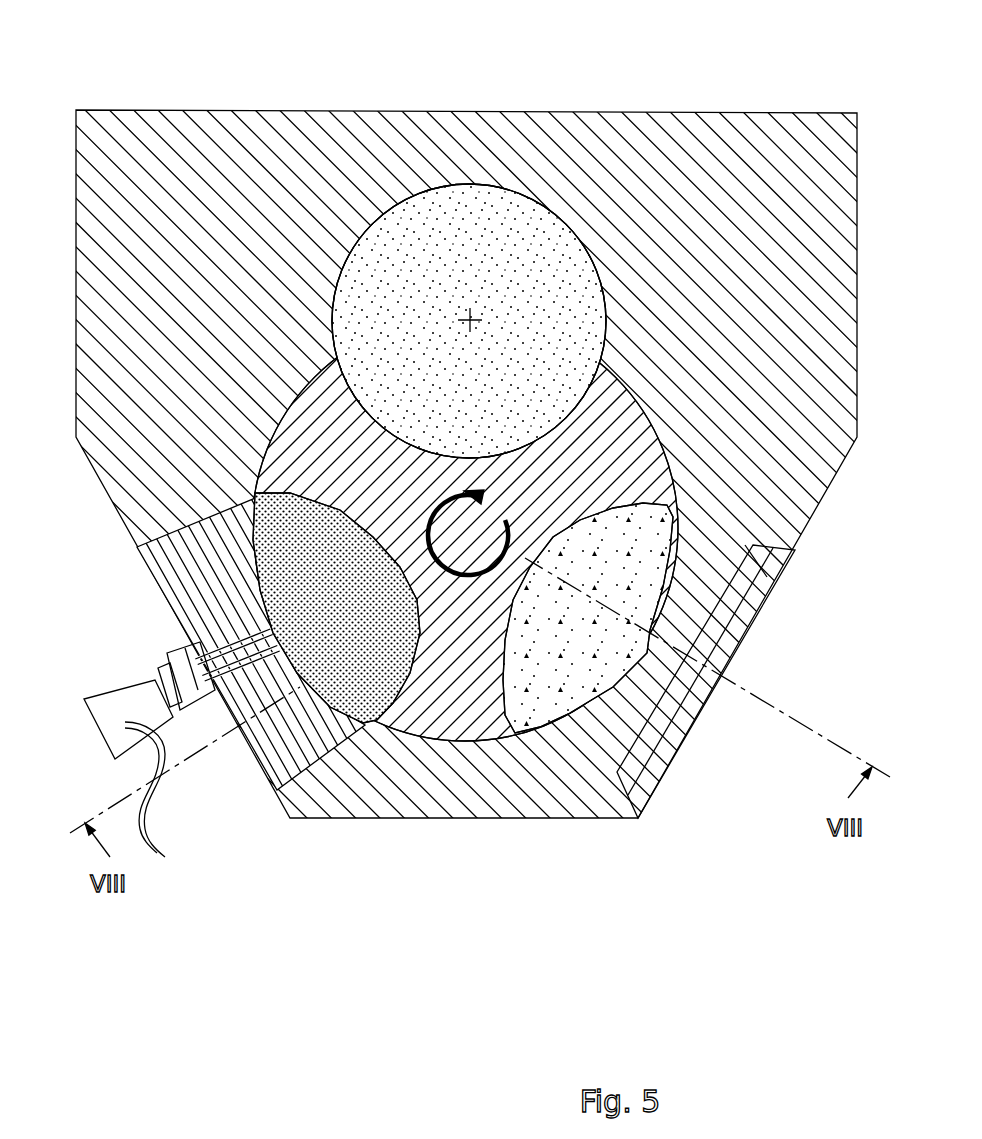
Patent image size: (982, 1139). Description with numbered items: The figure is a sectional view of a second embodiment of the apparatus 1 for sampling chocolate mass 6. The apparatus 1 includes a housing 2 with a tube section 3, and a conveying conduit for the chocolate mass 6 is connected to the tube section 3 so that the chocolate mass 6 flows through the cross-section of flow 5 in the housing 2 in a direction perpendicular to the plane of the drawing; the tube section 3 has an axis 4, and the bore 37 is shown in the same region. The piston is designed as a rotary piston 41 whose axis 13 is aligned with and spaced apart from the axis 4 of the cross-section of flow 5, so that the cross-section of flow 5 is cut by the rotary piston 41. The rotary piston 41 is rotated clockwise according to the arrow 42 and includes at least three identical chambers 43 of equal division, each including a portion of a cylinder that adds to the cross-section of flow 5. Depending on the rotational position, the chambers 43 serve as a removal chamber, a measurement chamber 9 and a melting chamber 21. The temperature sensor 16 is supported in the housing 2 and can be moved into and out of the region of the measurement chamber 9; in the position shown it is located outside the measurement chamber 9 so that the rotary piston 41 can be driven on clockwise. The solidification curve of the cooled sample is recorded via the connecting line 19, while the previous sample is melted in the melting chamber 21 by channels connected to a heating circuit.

The apparatus 1 is at (252, 75).
The housing 2 is at (683, 168).
The tube section 3 is at (398, 203).
The bore 37 is at (465, 528).
The axis 4 is at (472, 303).
The cross-section of flow 5 is at (480, 223).
The chocolate mass 6 is at (469, 321).
The measurement chamber 9 is at (366, 648).
The axis 13 is at (462, 530).
The temperature sensor 16 is at (273, 628).
The connecting line 19 is at (152, 830).
The melting chamber 21 is at (578, 670).
The rotary piston 41 is at (767, 577).
The arrow 42 is at (470, 526).
The chambers 43 is at (517, 397).